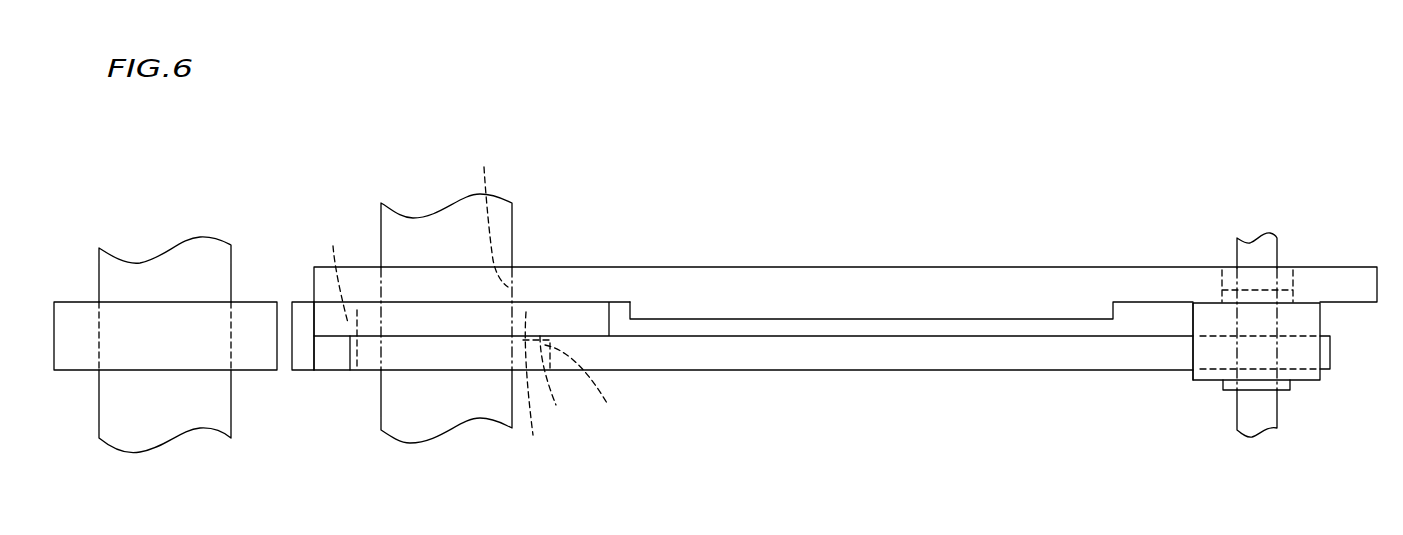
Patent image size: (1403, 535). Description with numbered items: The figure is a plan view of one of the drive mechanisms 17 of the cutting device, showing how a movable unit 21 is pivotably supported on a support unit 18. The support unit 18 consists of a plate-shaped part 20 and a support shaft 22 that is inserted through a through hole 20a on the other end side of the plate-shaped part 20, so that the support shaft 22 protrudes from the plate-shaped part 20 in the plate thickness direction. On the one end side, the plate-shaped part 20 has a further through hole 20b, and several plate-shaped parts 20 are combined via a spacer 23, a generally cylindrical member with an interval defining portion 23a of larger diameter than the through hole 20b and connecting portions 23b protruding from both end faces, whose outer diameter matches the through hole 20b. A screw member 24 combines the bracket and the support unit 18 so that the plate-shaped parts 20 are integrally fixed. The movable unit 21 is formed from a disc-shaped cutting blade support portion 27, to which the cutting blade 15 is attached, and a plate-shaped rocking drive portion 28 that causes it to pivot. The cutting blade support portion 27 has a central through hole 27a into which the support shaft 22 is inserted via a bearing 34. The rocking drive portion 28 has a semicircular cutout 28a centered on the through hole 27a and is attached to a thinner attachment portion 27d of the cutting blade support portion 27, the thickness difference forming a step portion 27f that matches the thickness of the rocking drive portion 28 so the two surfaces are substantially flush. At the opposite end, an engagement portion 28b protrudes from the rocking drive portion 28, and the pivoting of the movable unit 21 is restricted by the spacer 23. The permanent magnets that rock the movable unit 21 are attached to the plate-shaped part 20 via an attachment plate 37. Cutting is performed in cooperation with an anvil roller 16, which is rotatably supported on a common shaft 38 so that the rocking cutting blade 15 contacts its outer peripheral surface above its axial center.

The cutting blade 15 is at (304, 312).
The anvil roller 16 is at (252, 362).
The drive mechanism 17 is at (1073, 207).
The support unit 18 is at (429, 192).
The plate-shaped part 20 is at (793, 278).
The through hole 20a is at (484, 212).
The through hole 20b is at (1263, 278).
The movable unit 21 is at (358, 395).
The support shaft 22 is at (392, 242).
The spacer 23 is at (1317, 387).
The interval defining portion 23a is at (1193, 320).
The connecting portion 23b is at (1305, 298).
The screw member 24 is at (1268, 405).
The cutting blade support portion 27 is at (338, 374).
The through hole 27a is at (536, 391).
The attachment portion 27d is at (566, 312).
The step portion 27f is at (584, 383).
The rocking drive portion 28 is at (832, 360).
The cutout 28a is at (568, 386).
The engagement portion 28b is at (1330, 352).
The bearing 34 is at (333, 270).
The attachment plate 37 is at (872, 312).
The shaft 38 is at (100, 410).